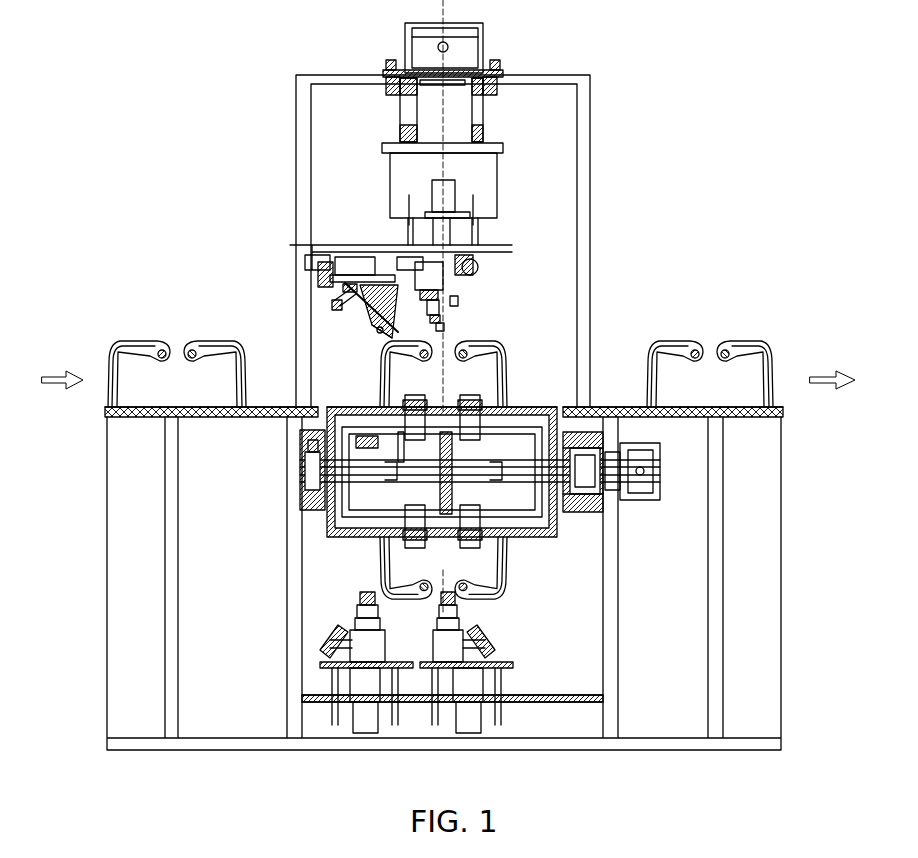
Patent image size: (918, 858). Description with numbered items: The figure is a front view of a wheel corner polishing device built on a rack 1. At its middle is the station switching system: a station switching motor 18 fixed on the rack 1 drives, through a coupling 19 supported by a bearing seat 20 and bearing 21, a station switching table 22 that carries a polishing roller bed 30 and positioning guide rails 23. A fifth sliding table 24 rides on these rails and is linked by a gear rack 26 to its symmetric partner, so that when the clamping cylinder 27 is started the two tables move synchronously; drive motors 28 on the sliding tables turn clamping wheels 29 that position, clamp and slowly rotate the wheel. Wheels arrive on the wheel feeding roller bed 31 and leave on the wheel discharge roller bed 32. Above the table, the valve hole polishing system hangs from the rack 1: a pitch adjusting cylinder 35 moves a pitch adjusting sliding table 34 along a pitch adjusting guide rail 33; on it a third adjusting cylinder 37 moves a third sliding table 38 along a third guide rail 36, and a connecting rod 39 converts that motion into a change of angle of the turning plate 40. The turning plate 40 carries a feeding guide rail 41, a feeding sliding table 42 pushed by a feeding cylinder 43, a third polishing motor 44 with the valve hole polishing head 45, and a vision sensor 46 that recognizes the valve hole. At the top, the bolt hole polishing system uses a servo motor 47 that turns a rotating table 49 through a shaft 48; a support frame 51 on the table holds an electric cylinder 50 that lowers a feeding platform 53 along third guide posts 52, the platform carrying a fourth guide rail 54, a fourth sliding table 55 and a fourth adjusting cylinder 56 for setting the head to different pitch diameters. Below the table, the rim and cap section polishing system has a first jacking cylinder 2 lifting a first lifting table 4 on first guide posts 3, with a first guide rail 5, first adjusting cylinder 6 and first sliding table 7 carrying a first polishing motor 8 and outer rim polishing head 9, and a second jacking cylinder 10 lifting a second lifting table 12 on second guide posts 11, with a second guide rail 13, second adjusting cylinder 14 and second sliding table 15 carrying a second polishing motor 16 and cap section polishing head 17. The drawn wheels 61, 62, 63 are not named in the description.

The rack 1 is at (300, 713).
The first jacking cylinder 2 is at (352, 728).
The first guide posts 3 is at (352, 725).
The first lifting table 4 is at (325, 668).
The first guide rail 5 is at (330, 644).
The first adjusting cylinder 6 is at (328, 634).
The first sliding table 7 is at (385, 640).
The first polishing motor 8 is at (356, 622).
The outer rim polishing head 9 is at (360, 600).
The second jacking cylinder 10 is at (482, 728).
The second guide posts 11 is at (483, 725).
The second lifting table 12 is at (508, 668).
The second guide rail 13 is at (490, 644).
The second adjusting cylinder 14 is at (492, 634).
The second sliding table 15 is at (436, 640).
The second polishing motor 16 is at (459, 622).
The cap section polishing head 17 is at (440, 600).
The station switching motor 18 is at (600, 452).
The coupling 19 is at (650, 460).
The bearing seat 20 is at (312, 490).
The bearing 21 is at (306, 478).
The station switching table 22 is at (300, 465).
The positioning guide rails 23 is at (375, 442).
The fifth sliding table 24 is at (402, 448).
The gear rack 26 is at (415, 532).
The clamping cylinder 27 is at (470, 532).
The drive motors 28 is at (452, 440).
The clamping wheels 29 is at (406, 400).
The polishing roller bed 30 is at (358, 407).
The wheel feeding roller bed 31 is at (290, 407).
The wheel discharge roller bed 32 is at (625, 407).
The pitch adjusting guide rail 33 is at (345, 257).
The pitch adjusting sliding table 34 is at (368, 256).
The pitch adjusting cylinder 35 is at (402, 258).
The third guide rail 36 is at (422, 262).
The third adjusting cylinder 37 is at (318, 272).
The third sliding table 38 is at (333, 302).
The connecting rod 39 is at (346, 292).
The turning plate 40 is at (371, 306).
The feeding guide rail 41 is at (372, 302).
The feeding sliding table 42 is at (378, 312).
The feeding cylinder 43 is at (378, 326).
The third polishing motor 44 is at (420, 292).
The valve hole polishing head 45 is at (427, 305).
The vision sensor 46 is at (430, 318).
The servo motor 47 is at (410, 50).
The shaft 48 is at (460, 126).
The rotating table 49 is at (503, 148).
The electric cylinder 50 is at (455, 190).
The support frame 51 is at (482, 200).
The third guide posts 52 is at (485, 212).
The feeding platform 53 is at (505, 246).
The fourth guide rail 54 is at (436, 327).
The fourth sliding table 55 is at (462, 276).
The fourth adjusting cylinder 56 is at (455, 306).
The shoe upper 61 is at (225, 346).
The shoe upper 62 is at (508, 346).
The shoe upper 63 is at (775, 348).